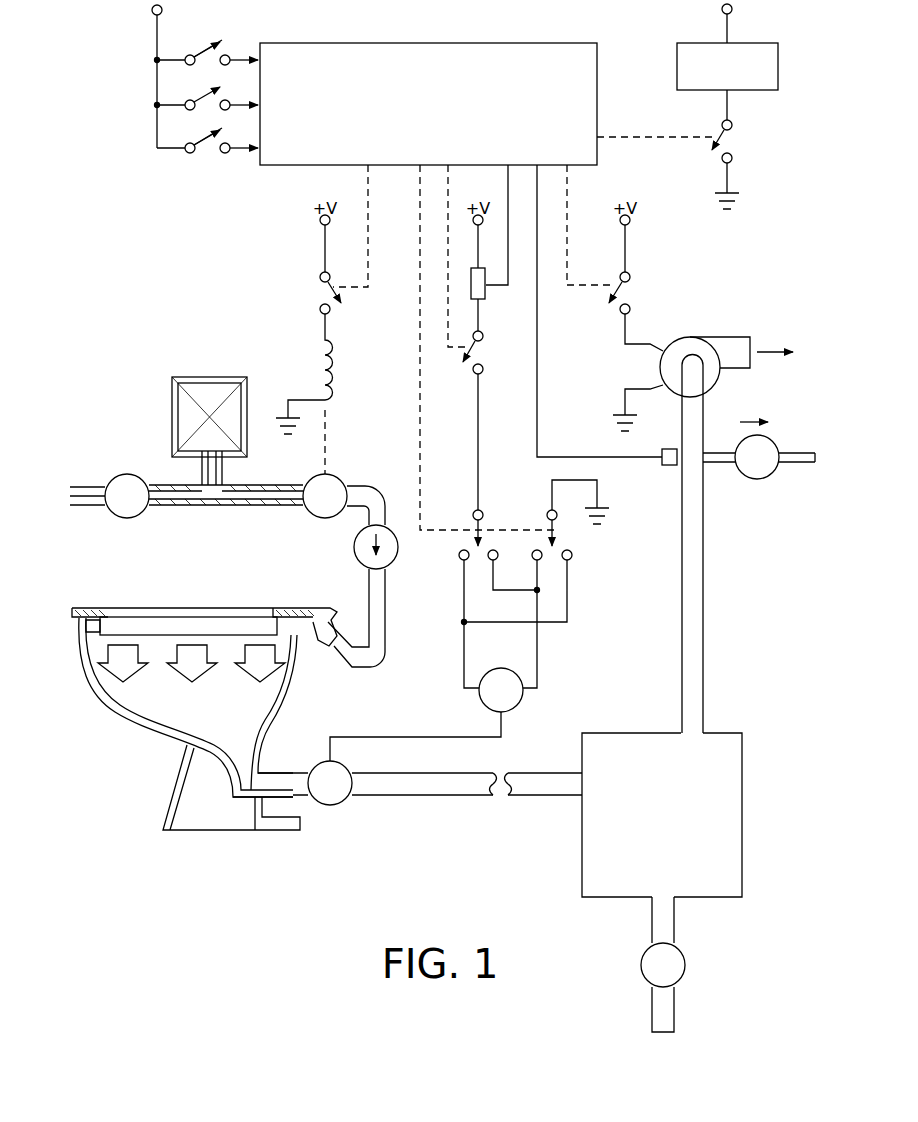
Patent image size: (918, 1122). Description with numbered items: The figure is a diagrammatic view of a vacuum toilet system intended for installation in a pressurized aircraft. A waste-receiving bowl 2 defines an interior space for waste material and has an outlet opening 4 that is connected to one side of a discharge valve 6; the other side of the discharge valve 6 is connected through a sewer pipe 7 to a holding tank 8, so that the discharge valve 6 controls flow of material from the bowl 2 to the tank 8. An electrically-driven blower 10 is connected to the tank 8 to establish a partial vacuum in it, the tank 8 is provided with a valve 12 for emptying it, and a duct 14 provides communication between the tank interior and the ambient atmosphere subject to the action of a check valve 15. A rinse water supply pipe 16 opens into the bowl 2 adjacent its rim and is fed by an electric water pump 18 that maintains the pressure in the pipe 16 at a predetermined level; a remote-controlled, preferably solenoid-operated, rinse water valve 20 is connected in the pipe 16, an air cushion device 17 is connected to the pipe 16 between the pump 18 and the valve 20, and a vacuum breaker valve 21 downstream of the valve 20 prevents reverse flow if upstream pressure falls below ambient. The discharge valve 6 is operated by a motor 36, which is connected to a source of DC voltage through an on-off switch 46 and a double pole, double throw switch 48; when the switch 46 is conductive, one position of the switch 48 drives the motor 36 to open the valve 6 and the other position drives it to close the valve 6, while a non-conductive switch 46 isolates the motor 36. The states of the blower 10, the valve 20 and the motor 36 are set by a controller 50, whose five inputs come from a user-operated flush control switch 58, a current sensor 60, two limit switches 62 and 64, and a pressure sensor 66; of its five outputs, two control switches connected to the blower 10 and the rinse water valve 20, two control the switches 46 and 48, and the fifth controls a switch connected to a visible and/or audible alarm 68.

The waste-receiving bowl 2 is at (143, 723).
The outlet opening 4 is at (243, 791).
The discharge valve 6 is at (348, 805).
The sewer pipe 7 is at (558, 797).
The holding tank 8 is at (742, 745).
The electrically-driven blower 10 is at (738, 337).
The valve 12 is at (684, 979).
The duct 14 is at (712, 464).
The check valve 15 is at (775, 468).
The rinse water supply pipe 16 is at (394, 486).
The air cushion device 17 is at (238, 377).
The electric water pump 18 is at (142, 477).
The rinse water valve 20 is at (312, 515).
The vacuum breaker valve 21 is at (354, 546).
The motor 36 is at (521, 706).
The on-off switch 46 is at (483, 345).
The double pole, double throw switch 48 is at (562, 534).
The controller 50 is at (363, 43).
The user-operated flush control switch 58 is at (200, 55).
The current sensor 60 is at (487, 292).
The limit switch 62 is at (205, 90).
The limit switch 64 is at (230, 150).
The pressure sensor 66 is at (670, 467).
The alarm 68 is at (677, 82).